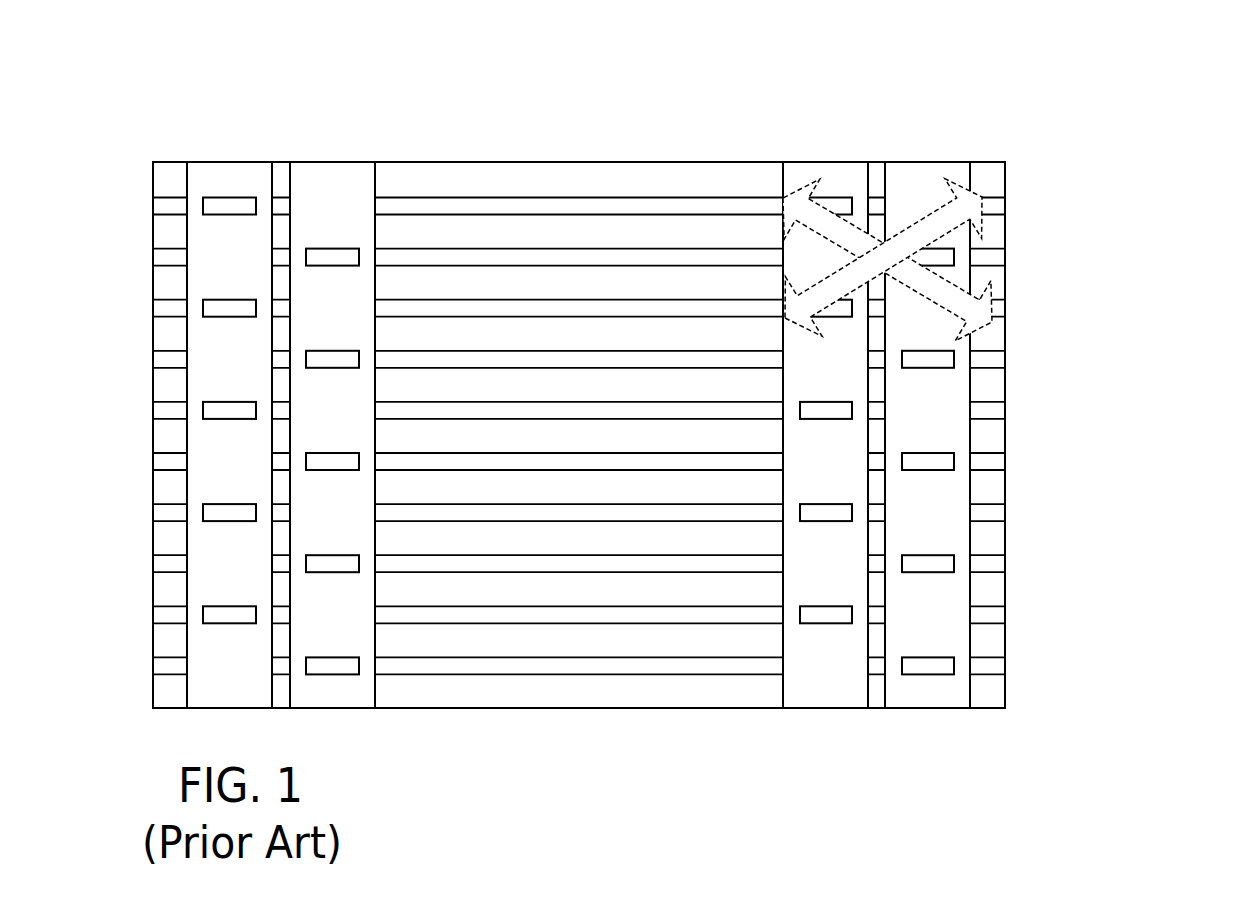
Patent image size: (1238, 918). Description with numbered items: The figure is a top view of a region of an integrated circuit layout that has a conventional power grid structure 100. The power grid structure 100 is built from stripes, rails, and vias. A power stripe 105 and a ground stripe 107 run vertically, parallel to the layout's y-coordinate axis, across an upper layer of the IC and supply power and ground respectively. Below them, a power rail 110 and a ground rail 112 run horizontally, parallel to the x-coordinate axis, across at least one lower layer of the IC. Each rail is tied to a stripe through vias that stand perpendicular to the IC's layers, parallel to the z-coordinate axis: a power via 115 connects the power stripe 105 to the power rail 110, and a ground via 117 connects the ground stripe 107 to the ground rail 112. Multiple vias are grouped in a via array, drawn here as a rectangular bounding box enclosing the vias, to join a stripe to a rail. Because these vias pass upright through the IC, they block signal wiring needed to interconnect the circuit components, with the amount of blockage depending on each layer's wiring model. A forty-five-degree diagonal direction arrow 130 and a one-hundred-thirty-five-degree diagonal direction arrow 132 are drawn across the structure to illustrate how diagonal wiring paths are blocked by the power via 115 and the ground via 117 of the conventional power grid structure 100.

The power grid structure 100 is at (1090, 78).
The power stripe 105 is at (203, 162).
The ground stripe 107 is at (332, 162).
The power rail 110 is at (153, 199).
The ground rail 112 is at (153, 257).
The power via 115 is at (210, 298).
The ground via 117 is at (348, 350).
The 45° diagonal direction arrow 130 is at (982, 196).
The 135° diagonal direction arrow 132 is at (989, 297).